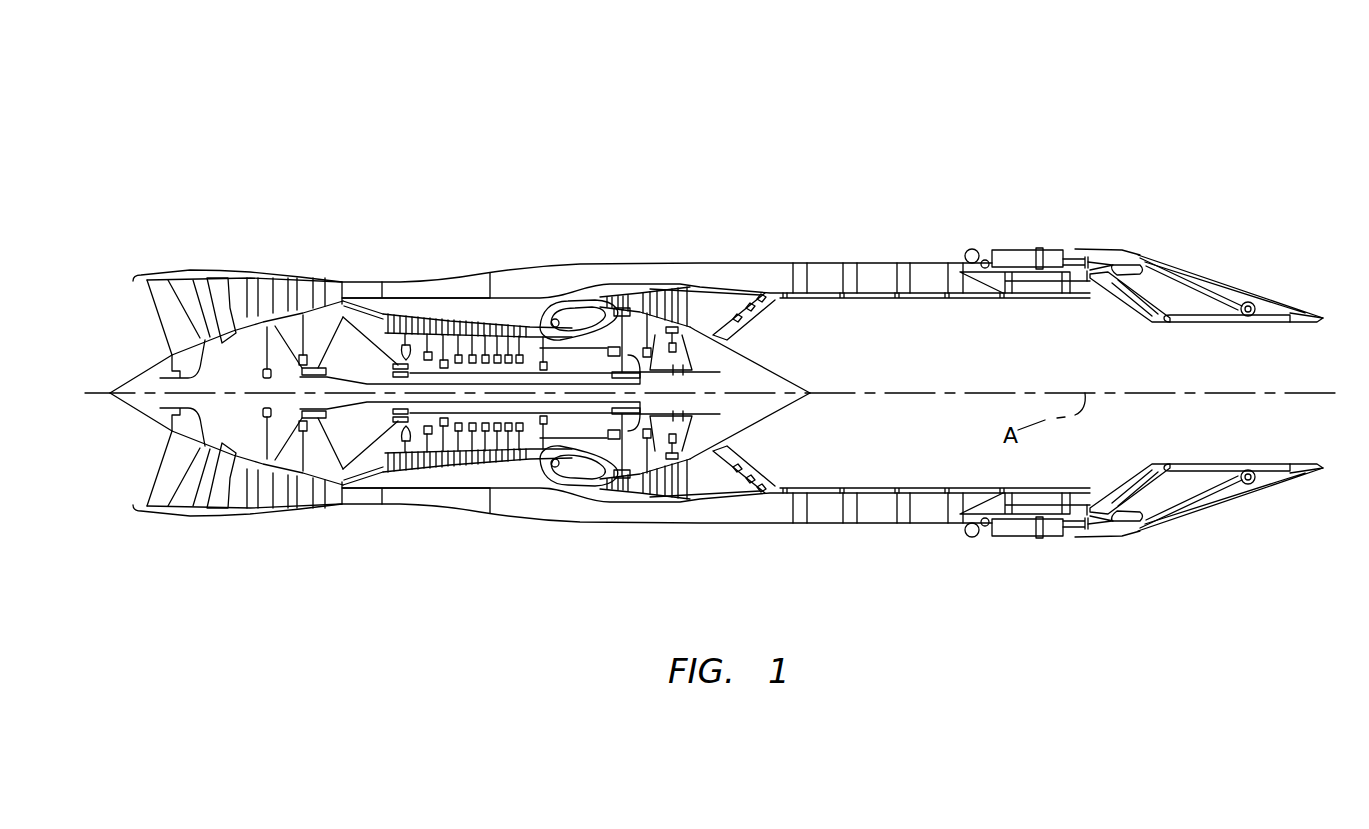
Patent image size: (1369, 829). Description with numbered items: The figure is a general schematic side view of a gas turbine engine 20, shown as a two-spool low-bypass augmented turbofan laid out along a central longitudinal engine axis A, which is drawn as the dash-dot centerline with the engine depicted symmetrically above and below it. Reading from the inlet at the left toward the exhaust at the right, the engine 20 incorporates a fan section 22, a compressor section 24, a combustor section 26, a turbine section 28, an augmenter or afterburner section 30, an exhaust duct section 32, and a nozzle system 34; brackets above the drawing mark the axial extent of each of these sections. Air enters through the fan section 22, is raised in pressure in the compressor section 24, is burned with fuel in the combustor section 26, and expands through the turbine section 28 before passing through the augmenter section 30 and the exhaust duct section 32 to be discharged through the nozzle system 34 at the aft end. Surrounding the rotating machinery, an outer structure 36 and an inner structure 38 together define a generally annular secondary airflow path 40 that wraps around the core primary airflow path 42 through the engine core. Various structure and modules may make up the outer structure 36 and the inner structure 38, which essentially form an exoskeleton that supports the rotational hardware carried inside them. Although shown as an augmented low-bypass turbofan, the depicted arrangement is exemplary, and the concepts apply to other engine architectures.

The gas turbine engine 20 is at (990, 103).
The fan section 22 is at (133, 200).
The compressor section 24 is at (548, 200).
The combustor section 26 is at (618, 200).
The turbine section 28 is at (693, 200).
The augmenter (afterburner) section 30 is at (693, 200).
The exhaust duct section 32 is at (1062, 200).
The nozzle system 34 is at (1062, 200).
The outer structure 36 is at (460, 509).
The inner structure 38 is at (517, 478).
The secondary airflow path 40 is at (413, 500).
The core primary airflow path 42 is at (340, 479).